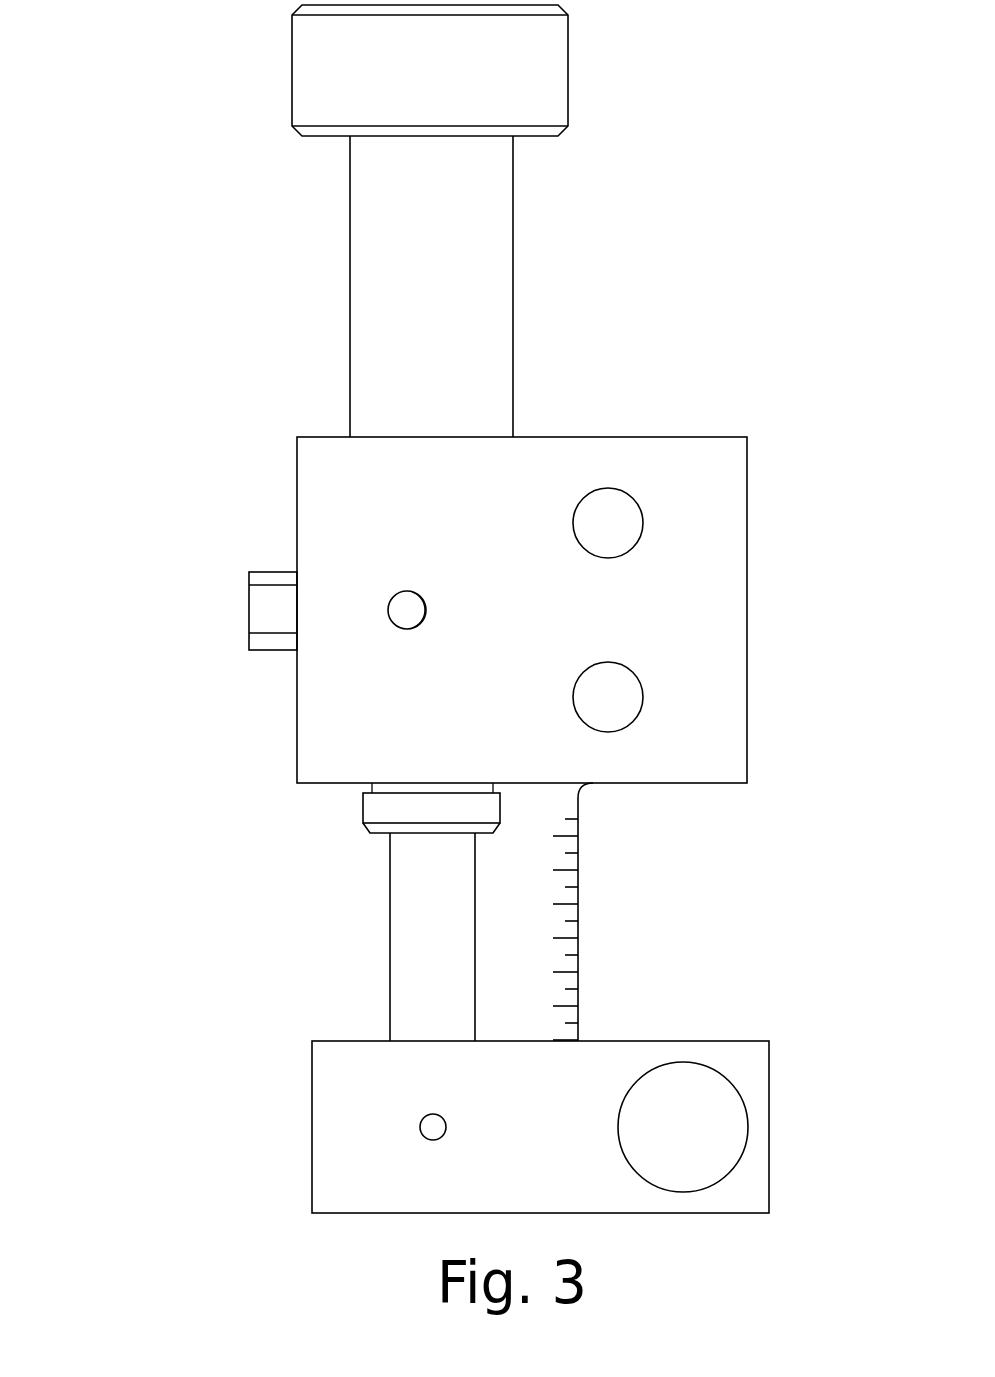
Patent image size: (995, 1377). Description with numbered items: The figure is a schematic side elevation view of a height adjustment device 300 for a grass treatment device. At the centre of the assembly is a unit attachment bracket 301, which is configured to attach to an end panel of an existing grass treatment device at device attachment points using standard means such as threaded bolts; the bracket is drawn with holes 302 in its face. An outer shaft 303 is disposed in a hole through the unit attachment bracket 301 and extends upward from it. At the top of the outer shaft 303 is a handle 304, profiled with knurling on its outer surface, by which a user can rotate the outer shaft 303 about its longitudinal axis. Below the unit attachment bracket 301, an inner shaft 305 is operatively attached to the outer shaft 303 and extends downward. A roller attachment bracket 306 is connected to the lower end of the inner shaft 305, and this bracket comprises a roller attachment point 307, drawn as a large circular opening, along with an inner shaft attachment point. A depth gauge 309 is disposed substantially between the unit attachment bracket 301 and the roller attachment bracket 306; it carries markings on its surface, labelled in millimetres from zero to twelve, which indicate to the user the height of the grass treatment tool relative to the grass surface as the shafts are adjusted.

The height adjustment device 300 is at (200, 135).
The unit attachment bracket 301 is at (582, 437).
The holes in block 302 is at (633, 508).
The outer shaft 303 is at (513, 249).
The handle 304 is at (568, 74).
The inner shaft 305 is at (390, 925).
The roller attachment bracket 306 is at (677, 1041).
The roller attachment point 307 is at (740, 1100).
The depth gauge 309 is at (578, 875).